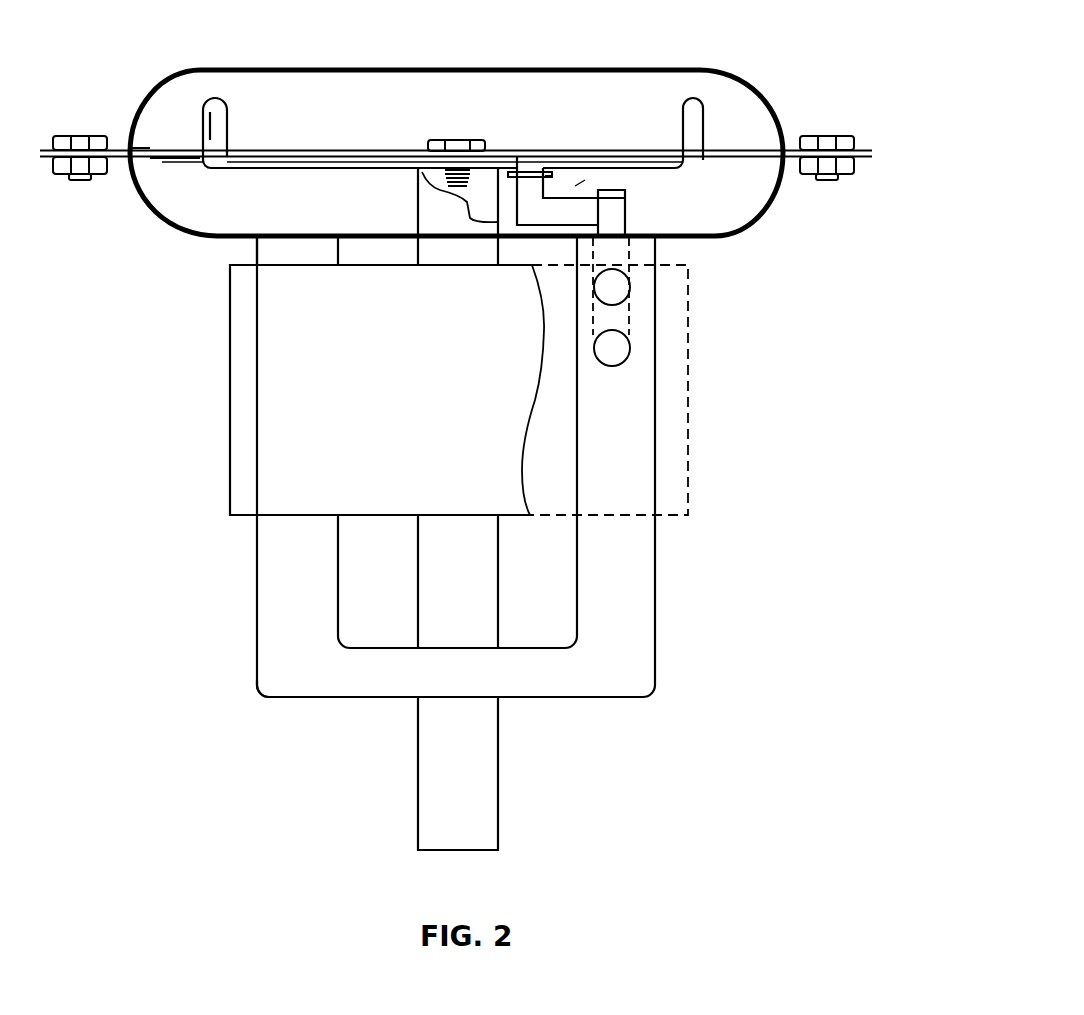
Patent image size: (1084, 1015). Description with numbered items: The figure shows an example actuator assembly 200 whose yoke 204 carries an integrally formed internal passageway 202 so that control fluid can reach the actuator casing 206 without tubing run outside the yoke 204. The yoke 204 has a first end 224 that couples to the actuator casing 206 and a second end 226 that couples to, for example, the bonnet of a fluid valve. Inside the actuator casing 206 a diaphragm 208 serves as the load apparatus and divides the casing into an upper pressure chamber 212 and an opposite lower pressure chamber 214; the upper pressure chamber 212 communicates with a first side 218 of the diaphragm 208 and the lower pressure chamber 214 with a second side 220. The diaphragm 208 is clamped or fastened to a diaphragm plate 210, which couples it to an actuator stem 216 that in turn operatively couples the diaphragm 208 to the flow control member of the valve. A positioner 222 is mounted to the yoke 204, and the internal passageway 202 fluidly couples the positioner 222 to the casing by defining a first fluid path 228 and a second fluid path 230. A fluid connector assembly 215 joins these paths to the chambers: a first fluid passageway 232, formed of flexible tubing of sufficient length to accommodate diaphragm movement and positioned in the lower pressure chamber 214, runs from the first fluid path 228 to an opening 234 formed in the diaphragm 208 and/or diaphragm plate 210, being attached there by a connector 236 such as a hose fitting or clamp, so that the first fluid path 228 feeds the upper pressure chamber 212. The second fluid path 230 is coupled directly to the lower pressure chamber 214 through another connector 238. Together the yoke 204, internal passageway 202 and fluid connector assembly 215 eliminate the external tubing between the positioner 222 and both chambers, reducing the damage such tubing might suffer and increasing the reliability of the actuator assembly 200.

The actuator assembly 200 is at (863, 81).
The internal passageway 202 is at (644, 316).
The yoke 204 is at (656, 660).
The actuator casing 206 is at (140, 193).
The diaphragm 208 is at (750, 155).
The diaphragm plate 210 is at (376, 150).
The upper pressure chamber 212 is at (478, 106).
The lower pressure chamber 214 is at (360, 213).
The fluid connector assembly 215 is at (578, 186).
The actuator stem 216 is at (416, 788).
The first side 218 is at (148, 147).
The second side 220 is at (179, 159).
The positioner 222 is at (230, 428).
The first end 224 is at (256, 248).
The second end 226 is at (280, 695).
The first fluid path 228 is at (620, 348).
The second fluid path 230 is at (620, 285).
The first fluid passageway 232 is at (573, 208).
The opening 234 is at (530, 162).
The connector 236 is at (548, 177).
The connector 238 is at (625, 193).